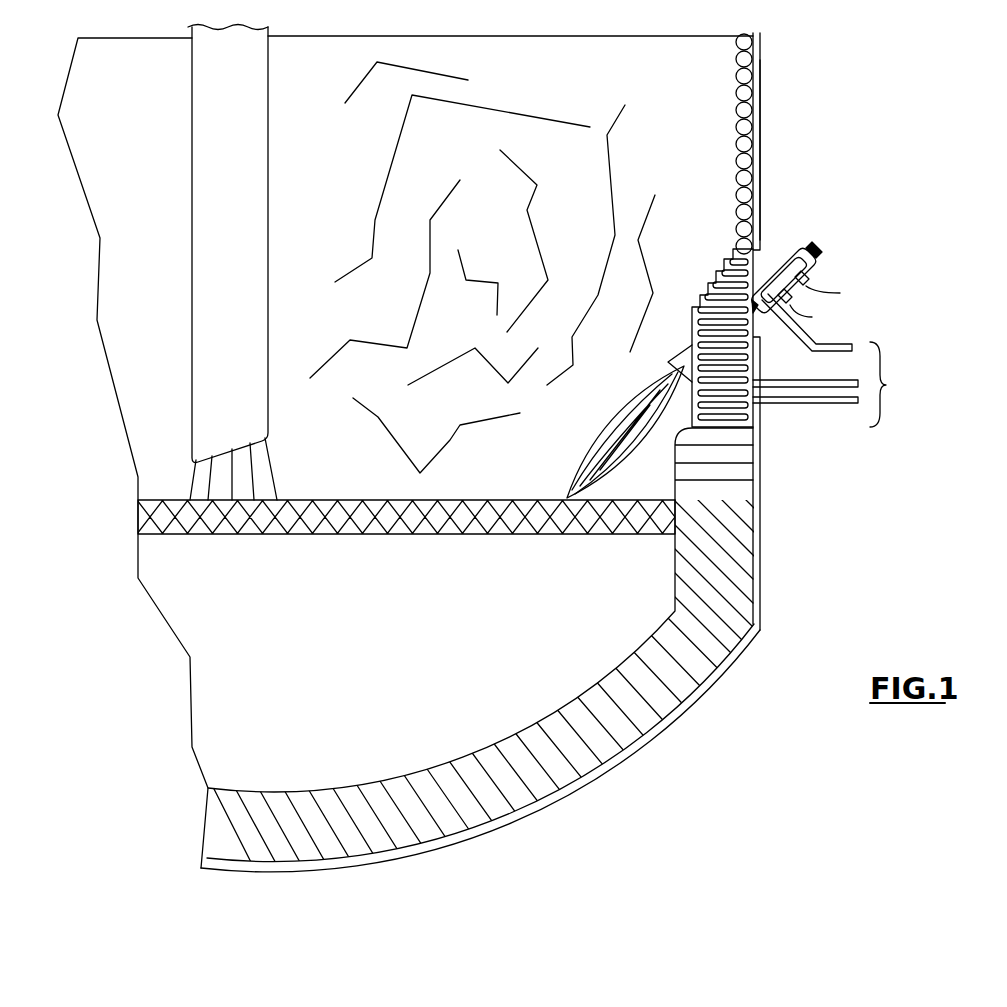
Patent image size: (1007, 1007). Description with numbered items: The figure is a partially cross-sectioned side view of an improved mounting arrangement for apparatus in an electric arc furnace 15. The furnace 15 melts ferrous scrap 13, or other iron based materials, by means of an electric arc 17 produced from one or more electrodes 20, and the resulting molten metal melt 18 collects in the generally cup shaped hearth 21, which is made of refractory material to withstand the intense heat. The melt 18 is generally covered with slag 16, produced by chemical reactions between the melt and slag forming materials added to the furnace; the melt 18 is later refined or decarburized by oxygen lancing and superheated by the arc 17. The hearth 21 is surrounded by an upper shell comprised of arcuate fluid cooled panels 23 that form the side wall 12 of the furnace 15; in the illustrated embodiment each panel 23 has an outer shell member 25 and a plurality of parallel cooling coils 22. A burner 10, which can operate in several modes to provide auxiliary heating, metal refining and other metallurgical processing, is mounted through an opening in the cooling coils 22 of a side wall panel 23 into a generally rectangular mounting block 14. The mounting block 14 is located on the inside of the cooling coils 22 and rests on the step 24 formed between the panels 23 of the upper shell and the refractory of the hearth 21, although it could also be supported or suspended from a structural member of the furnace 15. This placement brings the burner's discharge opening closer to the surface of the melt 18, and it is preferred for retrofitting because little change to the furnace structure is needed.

The burner 10 is at (783, 252).
The side wall 12 is at (778, 350).
The ferrous scrap 13 is at (506, 247).
The mounting block 14 is at (722, 266).
The electric arc furnace 15 is at (891, 78).
The slag 16 is at (490, 500).
The electric arc 17 is at (272, 472).
The molten metal melt 18 is at (580, 600).
The electrode 20 is at (255, 153).
The hearth 21 is at (580, 710).
The cooling coil 22 is at (735, 80).
The fluid cooled panel 23 is at (704, 144).
The step 24 is at (737, 432).
The outer shell member 25 is at (761, 165).